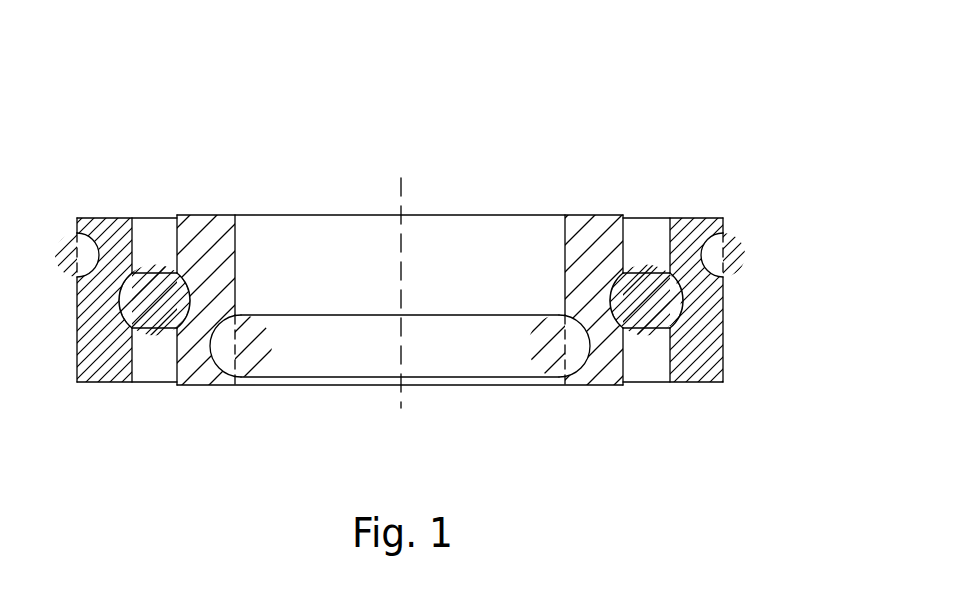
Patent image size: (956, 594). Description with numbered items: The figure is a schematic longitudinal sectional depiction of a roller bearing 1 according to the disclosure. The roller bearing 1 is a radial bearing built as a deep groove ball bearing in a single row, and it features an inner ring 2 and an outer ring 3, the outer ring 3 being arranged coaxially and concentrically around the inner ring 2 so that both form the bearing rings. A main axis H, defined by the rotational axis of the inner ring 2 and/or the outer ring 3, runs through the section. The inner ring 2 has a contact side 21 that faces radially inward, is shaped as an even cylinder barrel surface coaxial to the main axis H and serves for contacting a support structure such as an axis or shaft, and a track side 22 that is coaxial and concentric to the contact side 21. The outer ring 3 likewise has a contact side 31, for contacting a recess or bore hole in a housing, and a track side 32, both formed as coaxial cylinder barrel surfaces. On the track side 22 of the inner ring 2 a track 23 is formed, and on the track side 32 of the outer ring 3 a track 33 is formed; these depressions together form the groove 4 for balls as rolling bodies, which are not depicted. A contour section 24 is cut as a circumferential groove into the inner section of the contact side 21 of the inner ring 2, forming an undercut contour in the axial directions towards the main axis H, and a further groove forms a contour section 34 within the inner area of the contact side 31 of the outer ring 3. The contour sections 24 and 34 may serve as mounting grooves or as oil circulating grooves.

The roller bearing 1 is at (435, 241).
The inner ring 2 is at (370, 283).
The contact side 21 is at (249, 216).
The track side 22 is at (177, 231).
The track 23 is at (189, 296).
The contour section 24 is at (237, 353).
The outer ring 3 is at (435, 335).
The contact side 31 is at (726, 352).
The track side 32 is at (665, 366).
The track 33 is at (688, 298).
The contour section 34 is at (726, 255).
The groove 4 is at (161, 314).
The main axis H is at (401, 358).